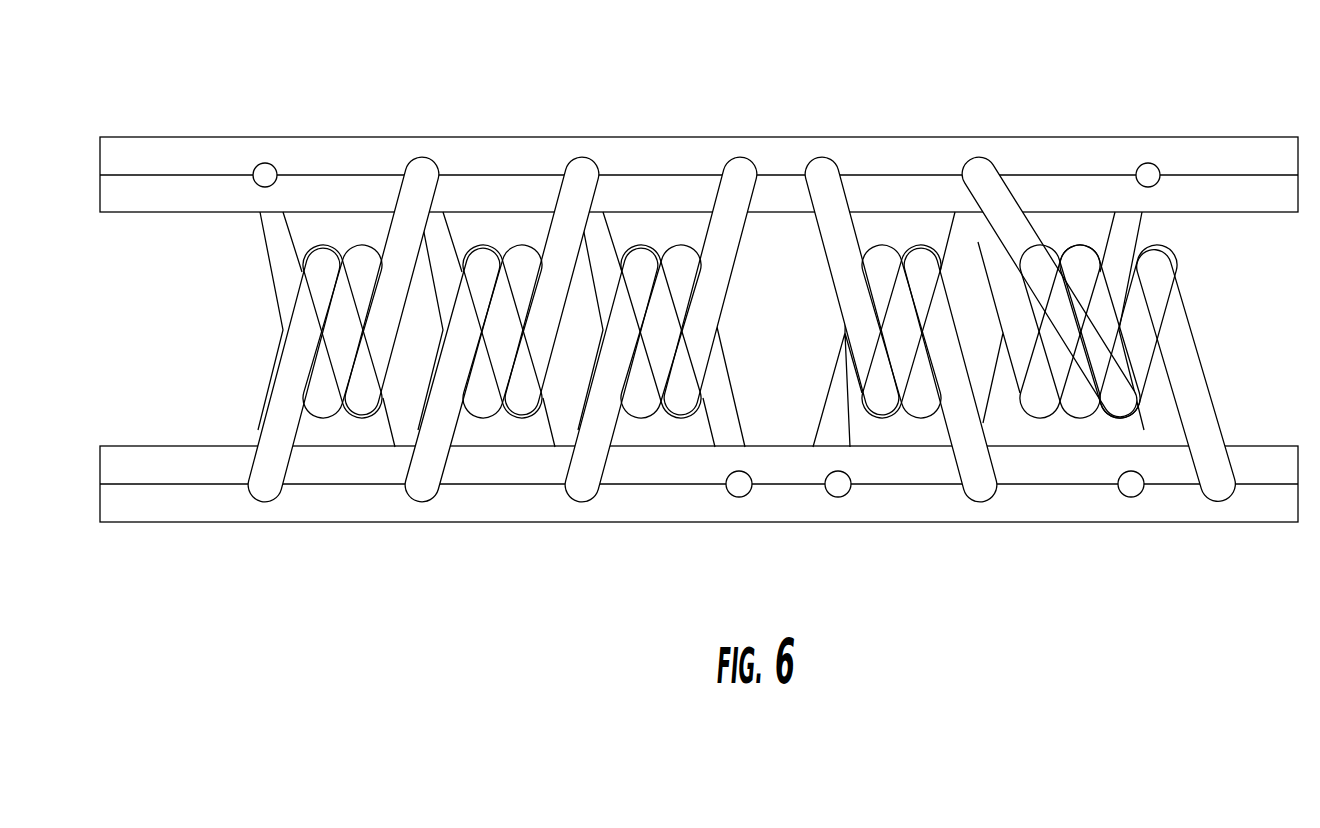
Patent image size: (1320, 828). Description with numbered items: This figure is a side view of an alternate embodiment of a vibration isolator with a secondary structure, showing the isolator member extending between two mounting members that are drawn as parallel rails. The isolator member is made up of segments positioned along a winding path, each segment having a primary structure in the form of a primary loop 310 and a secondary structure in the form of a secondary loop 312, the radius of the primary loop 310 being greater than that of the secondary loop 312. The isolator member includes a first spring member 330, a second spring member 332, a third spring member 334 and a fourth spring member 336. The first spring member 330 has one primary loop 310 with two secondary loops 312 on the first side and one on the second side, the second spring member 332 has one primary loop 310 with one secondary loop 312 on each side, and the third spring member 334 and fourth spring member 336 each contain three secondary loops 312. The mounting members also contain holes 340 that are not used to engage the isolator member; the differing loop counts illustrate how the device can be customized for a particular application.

The primary loop 310 is at (1207, 418).
The secondary loop 312 is at (1142, 338).
The first spring member 330 is at (987, 205).
The second spring member 332 is at (822, 174).
The third spring member 334 is at (740, 170).
The fourth spring member 336 is at (583, 174).
The holes 340 is at (265, 180).